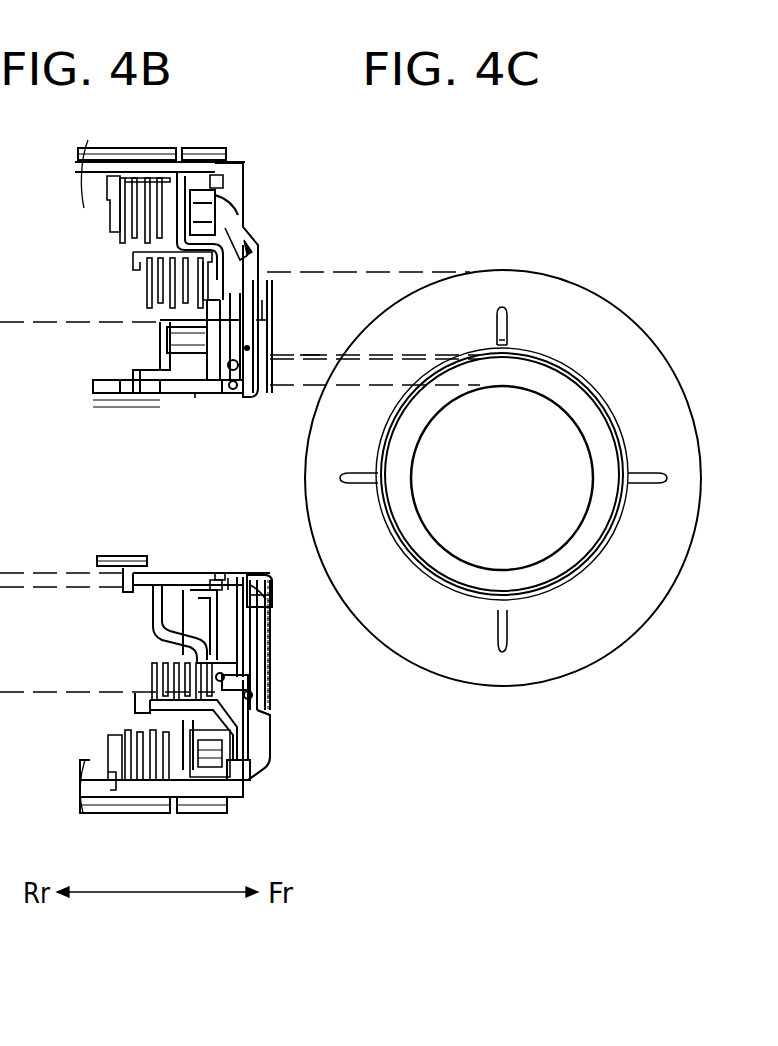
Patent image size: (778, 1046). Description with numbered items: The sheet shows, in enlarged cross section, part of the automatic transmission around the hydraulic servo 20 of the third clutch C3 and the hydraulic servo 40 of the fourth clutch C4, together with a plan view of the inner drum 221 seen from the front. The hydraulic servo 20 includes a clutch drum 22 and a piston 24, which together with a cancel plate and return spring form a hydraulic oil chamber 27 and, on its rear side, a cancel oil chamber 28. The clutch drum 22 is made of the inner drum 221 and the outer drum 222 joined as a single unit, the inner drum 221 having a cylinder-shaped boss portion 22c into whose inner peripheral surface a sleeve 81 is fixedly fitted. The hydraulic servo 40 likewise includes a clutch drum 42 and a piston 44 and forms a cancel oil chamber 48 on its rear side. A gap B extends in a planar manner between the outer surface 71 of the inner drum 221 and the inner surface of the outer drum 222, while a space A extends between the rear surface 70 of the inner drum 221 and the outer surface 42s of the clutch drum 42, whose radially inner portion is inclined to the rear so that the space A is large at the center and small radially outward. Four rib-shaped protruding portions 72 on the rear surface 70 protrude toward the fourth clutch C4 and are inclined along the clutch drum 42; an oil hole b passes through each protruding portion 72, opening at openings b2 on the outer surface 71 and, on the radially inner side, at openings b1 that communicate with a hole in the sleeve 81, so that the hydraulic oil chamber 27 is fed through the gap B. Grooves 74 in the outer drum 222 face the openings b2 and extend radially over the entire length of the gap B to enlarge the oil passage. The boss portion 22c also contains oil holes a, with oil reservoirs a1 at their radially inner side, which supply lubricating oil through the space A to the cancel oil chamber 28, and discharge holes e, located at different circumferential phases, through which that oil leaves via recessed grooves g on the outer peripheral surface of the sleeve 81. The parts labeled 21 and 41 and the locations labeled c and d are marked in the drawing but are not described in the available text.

In FIG. 4B, the hydraulic servo 20 is at (243, 283).
In FIG. 4B, the clutch 21 is at (92, 230).
In FIG. 4B, the clutch drum 22 is at (270, 697).
In FIG. 4B, the inner drum 221 is at (258, 585).
In FIG. 4C, the inner drum 221 is at (634, 179).
In FIG. 4B, the outer drum 222 is at (245, 765).
In FIG. 4B, the boss portion 22c is at (158, 405).
In FIG. 4B, the piston 24 is at (213, 287).
In FIG. 4B, the hydraulic oil chamber 27 is at (255, 720).
In FIG. 4B, the cancel oil chamber 28 is at (200, 768).
In FIG. 4B, the hydraulic servo 40 is at (288, 300).
In FIG. 4B, the clutch 41 is at (126, 297).
In FIG. 4B, the clutch drum 42 is at (255, 648).
In FIG. 4B, the outer surface 42s is at (265, 625).
In FIG. 4B, the piston 44 is at (238, 250).
In FIG. 4B, the cancel oil chamber 48 is at (183, 625).
In FIG. 4B, the rear surface 70 is at (265, 595).
In FIG. 4C, the outer surface 71 is at (608, 605).
In FIG. 4B, the protruding portions 72 is at (0, 432).
In FIG. 4B, the grooves 74 is at (286, 275).
In FIG. 4B, the sleeve 81 is at (183, 578).
In FIG. 4B, the space A is at (283, 300).
In FIG. 4B, the gap B is at (265, 675).
In FIG. 4B, the oil holes a is at (232, 578).
In FIG. 4B, the oil reservoir a1 is at (220, 580).
In FIG. 4B, the oil holes b is at (258, 348).
In FIG. 4B, the oil reservoir b1 is at (302, 353).
In FIG. 4C, the openings b2 is at (510, 738).
In FIG. 4B, the gap c is at (195, 398).
In FIG. 4B, the gap d is at (125, 408).
In FIG. 4B, the discharge holes e is at (0, 554).
In FIG. 4B, the recessed grooves g is at (258, 580).
In FIG. 4B, the third clutch C3 is at (96, 752).
In FIG. 4B, the fourth clutch C4 is at (136, 676).